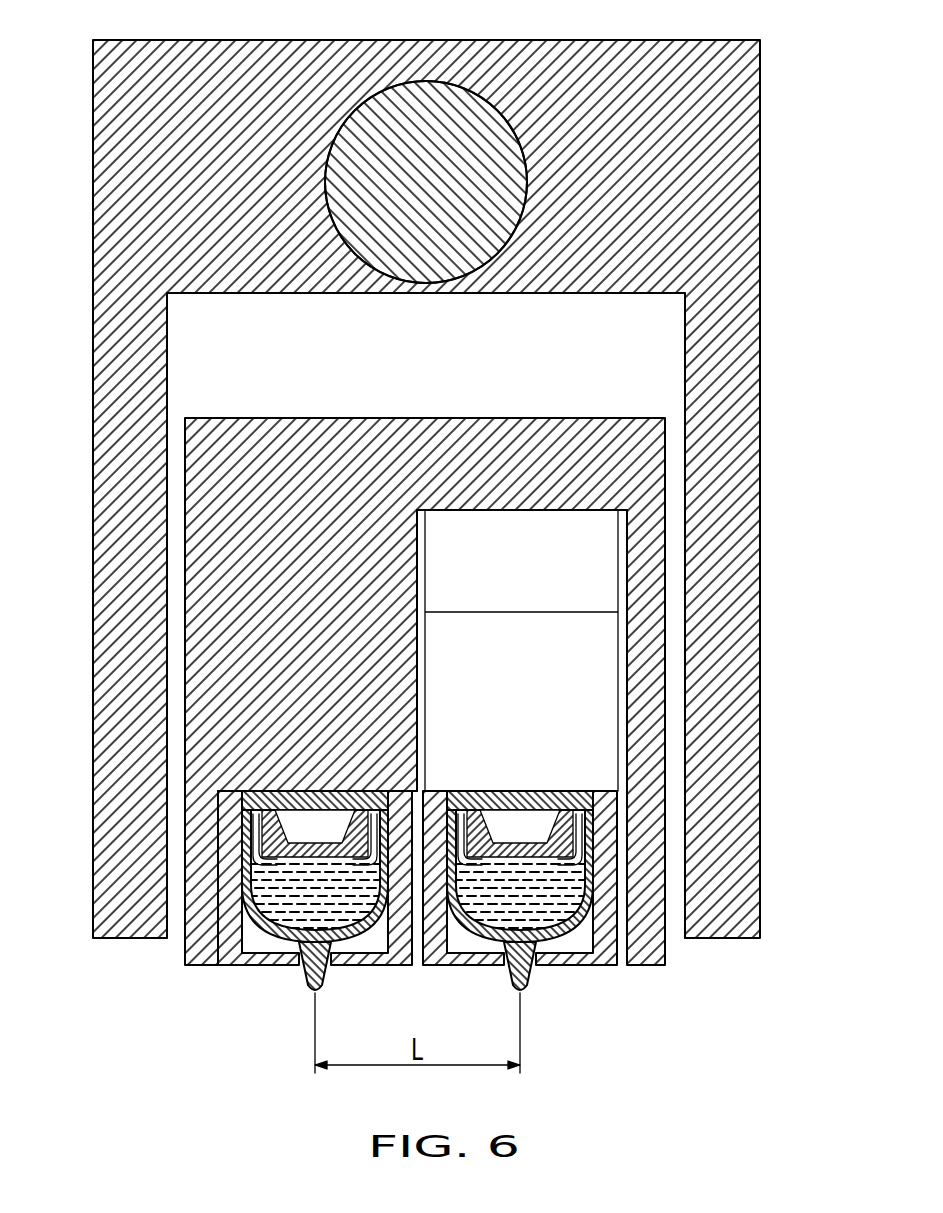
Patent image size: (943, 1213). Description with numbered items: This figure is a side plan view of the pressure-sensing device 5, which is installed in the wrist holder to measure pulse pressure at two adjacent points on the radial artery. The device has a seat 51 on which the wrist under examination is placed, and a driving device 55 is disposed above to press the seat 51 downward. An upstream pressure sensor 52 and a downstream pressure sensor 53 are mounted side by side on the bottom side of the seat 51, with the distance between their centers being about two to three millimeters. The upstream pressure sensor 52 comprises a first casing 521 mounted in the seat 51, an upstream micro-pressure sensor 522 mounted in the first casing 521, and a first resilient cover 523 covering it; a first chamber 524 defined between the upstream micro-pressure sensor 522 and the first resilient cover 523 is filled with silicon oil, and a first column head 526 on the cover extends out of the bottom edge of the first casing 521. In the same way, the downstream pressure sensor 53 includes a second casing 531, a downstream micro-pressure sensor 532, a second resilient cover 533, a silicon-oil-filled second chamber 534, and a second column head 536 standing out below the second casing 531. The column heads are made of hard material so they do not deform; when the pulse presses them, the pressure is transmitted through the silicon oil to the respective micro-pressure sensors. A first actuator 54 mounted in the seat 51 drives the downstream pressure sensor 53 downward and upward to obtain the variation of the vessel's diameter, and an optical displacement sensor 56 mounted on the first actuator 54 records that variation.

The pressure-sensing device 5 is at (727, 103).
The seat 51 is at (648, 565).
The first actuator 54 is at (600, 650).
The driving device 55 is at (620, 297).
The optical displacement sensor 56 is at (500, 535).
The upstream pressure sensor 52 is at (257, 896).
The first casing 521 is at (228, 968).
The upstream micro-pressure sensor 522 is at (318, 840).
The first resilient cover 523 is at (242, 850).
The first chamber 524 is at (348, 908).
The first column head 526 is at (307, 990).
The downstream pressure sensor 53 is at (617, 887).
The second casing 531 is at (648, 968).
The downstream micro-pressure sensor 532 is at (548, 843).
The second resilient cover 533 is at (600, 887).
The second chamber 534 is at (500, 912).
The second column head 536 is at (535, 968).